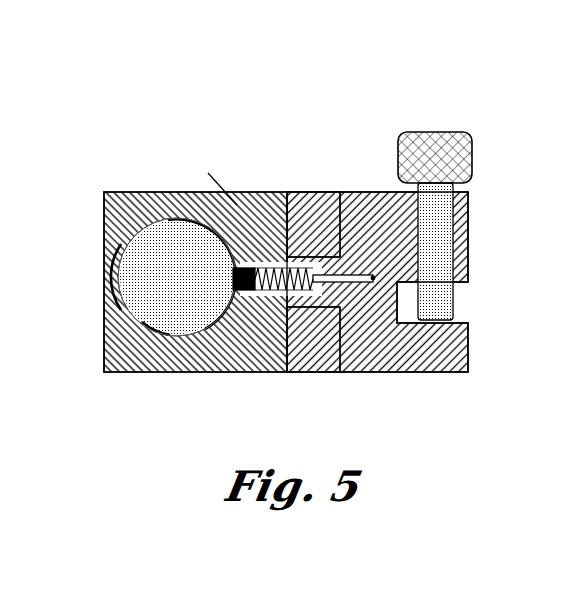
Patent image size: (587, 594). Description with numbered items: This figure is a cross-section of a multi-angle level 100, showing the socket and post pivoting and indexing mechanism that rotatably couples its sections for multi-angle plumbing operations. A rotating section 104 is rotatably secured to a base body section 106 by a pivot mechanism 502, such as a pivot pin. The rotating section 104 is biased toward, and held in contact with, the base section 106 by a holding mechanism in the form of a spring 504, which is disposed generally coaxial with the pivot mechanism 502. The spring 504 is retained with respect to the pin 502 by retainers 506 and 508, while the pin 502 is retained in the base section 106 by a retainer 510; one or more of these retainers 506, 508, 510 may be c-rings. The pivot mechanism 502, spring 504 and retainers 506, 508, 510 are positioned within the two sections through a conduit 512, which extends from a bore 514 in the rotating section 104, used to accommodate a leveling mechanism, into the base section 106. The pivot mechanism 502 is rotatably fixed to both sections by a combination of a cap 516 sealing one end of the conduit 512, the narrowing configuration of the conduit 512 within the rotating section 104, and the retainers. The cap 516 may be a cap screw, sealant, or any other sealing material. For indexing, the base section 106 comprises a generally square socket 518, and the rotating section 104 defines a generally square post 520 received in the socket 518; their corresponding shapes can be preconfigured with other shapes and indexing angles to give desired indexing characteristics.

The multi-angle level 100 is at (143, 64).
The rotating section 104 is at (135, 202).
The base body section 106 is at (390, 362).
The pivot mechanism 502 is at (352, 235).
The spring 504 is at (275, 262).
The retainer 506 is at (290, 314).
The retainer 508 is at (306, 230).
The retainer 510 is at (381, 270).
The conduit 512 is at (208, 173).
The bore 514 is at (145, 260).
The cap 516 is at (227, 252).
The socket 518 is at (322, 307).
The post 520 is at (312, 307).